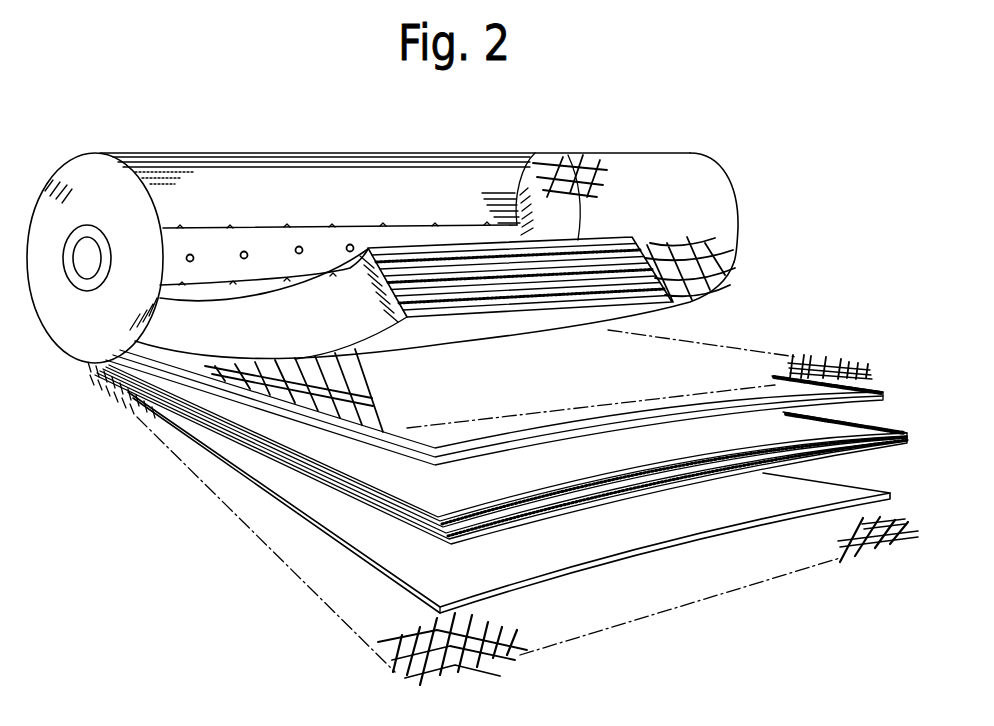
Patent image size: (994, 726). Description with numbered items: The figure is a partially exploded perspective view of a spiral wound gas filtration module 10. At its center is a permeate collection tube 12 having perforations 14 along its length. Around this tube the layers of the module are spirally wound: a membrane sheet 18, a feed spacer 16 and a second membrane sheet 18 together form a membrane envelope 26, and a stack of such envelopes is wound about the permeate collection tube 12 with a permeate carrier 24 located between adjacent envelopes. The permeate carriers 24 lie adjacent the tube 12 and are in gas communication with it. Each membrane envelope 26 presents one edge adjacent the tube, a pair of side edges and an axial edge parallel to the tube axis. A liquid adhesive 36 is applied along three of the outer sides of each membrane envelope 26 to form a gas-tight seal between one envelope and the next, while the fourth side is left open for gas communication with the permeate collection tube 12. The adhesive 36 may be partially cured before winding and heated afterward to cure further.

The spiral wound gas filtration module 10 is at (382, 258).
The permeate collection tube 12 is at (210, 242).
The perforations 14 is at (299, 246).
The feed spacer 16 is at (633, 453).
The membrane sheet 18 is at (877, 387).
The permeate carrier 24 is at (830, 362).
The membrane envelope 26 is at (198, 388).
The liquid adhesive 36 is at (725, 410).